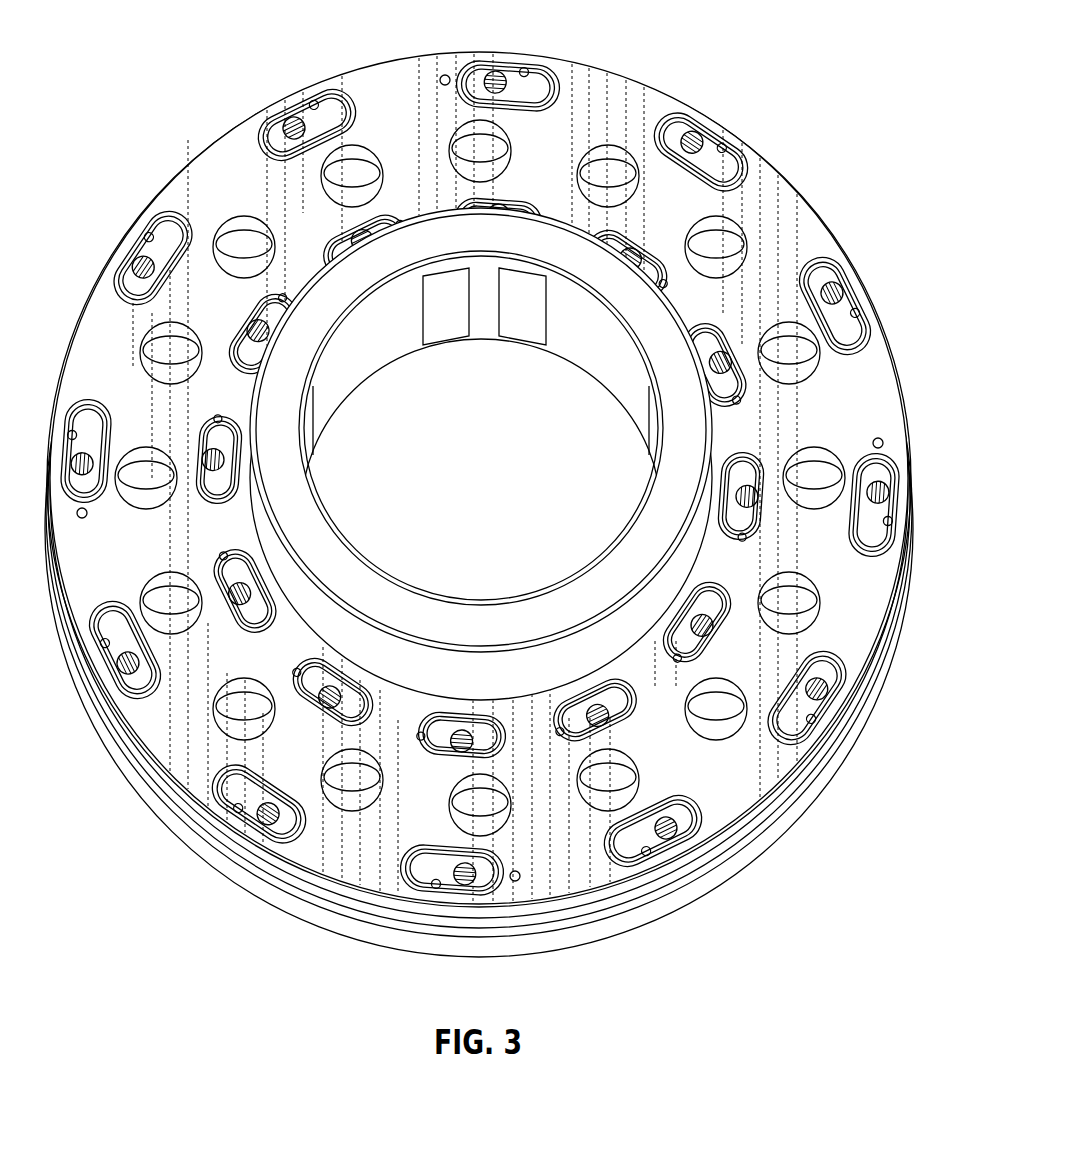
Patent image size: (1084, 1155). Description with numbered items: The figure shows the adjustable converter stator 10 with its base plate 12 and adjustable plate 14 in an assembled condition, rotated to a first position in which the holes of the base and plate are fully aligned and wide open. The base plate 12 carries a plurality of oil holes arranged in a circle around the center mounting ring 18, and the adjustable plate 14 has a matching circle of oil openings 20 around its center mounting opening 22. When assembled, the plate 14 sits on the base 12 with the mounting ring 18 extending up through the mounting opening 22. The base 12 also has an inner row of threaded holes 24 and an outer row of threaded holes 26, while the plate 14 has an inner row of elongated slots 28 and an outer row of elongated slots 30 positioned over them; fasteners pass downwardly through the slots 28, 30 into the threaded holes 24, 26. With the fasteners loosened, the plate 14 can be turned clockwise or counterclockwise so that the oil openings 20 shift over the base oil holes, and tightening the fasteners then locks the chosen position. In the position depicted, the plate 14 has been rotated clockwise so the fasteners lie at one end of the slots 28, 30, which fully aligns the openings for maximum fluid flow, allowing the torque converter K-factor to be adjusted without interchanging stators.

The adjustable converter stator 10 is at (152, 46).
The base plate 12 is at (788, 800).
The adjustable plate 14 is at (697, 848).
The center mounting ring 18 is at (316, 303).
The oil openings 20 is at (702, 735).
The center mounting opening 22 is at (511, 454).
The inner row of threaded holes 24 is at (742, 498).
The outer row of threaded holes 26 is at (878, 480).
The inner row of elongated slots 28 is at (672, 660).
The outer row of elongated slots 30 is at (892, 528).